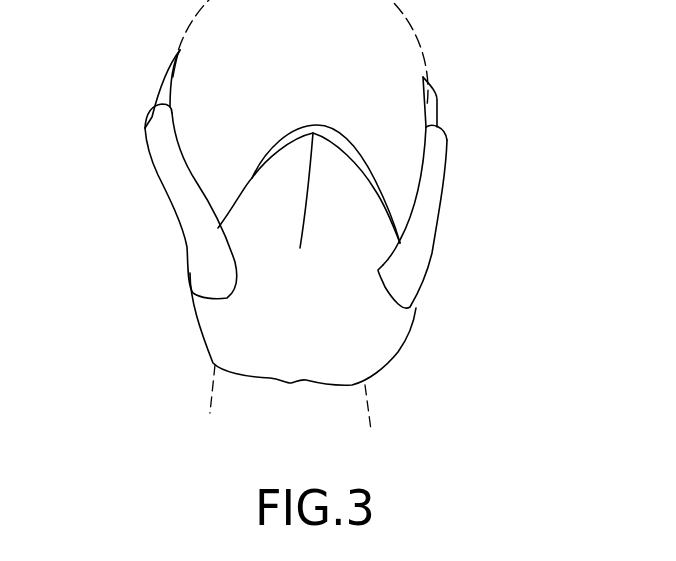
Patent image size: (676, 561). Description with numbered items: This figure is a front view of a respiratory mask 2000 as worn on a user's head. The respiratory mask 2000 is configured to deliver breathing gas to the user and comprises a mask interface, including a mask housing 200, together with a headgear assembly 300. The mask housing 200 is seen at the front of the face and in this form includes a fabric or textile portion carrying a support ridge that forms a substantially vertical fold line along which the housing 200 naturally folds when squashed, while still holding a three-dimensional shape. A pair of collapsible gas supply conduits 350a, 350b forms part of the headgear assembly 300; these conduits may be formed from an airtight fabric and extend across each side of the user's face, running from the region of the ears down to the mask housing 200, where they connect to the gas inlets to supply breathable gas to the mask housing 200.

The respiratory mask 2000 is at (446, 51).
The mask housing 200 is at (333, 333).
The headgear assembly 300 is at (163, 98).
The gas supply conduit 350a is at (177, 192).
The gas supply conduit 350b is at (433, 155).